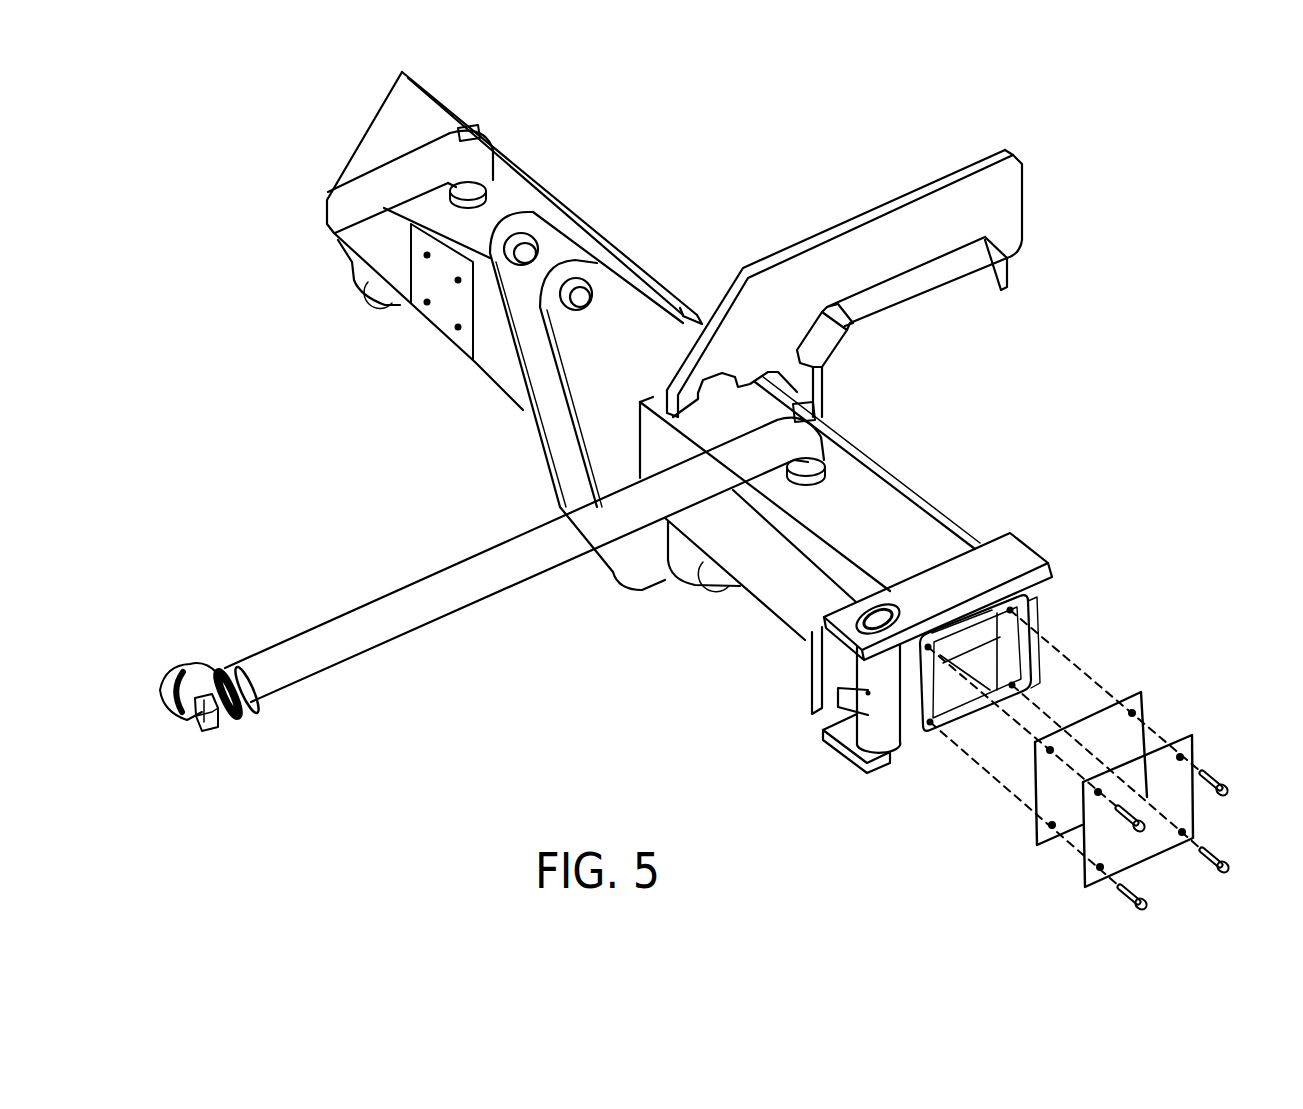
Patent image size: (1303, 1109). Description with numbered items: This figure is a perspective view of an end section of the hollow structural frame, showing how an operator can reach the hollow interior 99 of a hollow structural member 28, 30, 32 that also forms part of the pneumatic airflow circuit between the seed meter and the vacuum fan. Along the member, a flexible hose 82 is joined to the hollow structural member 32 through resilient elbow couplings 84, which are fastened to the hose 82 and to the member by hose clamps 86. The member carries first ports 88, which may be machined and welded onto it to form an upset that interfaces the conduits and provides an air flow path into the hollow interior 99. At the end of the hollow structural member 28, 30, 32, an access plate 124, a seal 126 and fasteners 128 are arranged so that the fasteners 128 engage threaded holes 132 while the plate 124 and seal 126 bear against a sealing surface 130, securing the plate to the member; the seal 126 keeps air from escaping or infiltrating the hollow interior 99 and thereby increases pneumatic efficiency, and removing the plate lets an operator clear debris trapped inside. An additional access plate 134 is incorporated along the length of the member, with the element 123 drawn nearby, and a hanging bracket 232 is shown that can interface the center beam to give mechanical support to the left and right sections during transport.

The hollow structural member 28 is at (885, 518).
The hollow structural member 30 is at (885, 518).
The hollow structural member 32 is at (923, 510).
The flexible hose 82 is at (397, 140).
The elbow coupling 84 is at (478, 142).
The hose clamp 86 is at (240, 697).
The first port 88 is at (474, 199).
The hollow interior 99 is at (975, 672).
The beam body 123 is at (457, 348).
The access plate 124 is at (1197, 748).
The seal 126 is at (1125, 697).
The fastener 128 is at (1220, 868).
The sealing surface 130 is at (1047, 637).
The threaded hole 132 is at (931, 710).
The additional access plate 134 is at (441, 316).
The hanging bracket 232 is at (937, 180).